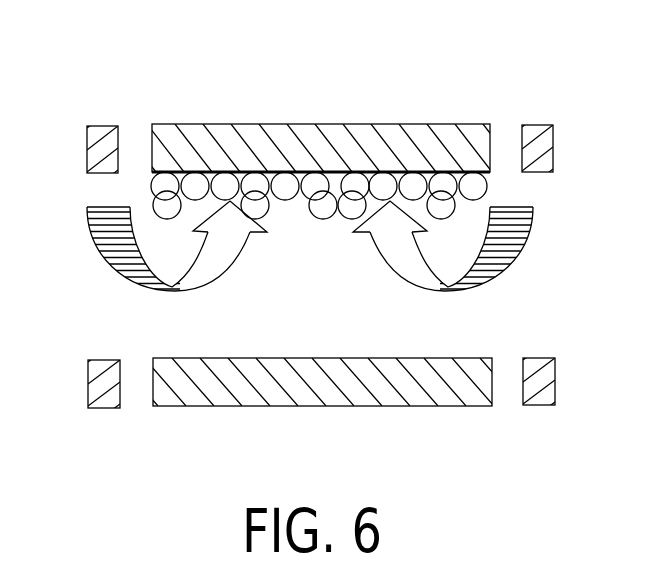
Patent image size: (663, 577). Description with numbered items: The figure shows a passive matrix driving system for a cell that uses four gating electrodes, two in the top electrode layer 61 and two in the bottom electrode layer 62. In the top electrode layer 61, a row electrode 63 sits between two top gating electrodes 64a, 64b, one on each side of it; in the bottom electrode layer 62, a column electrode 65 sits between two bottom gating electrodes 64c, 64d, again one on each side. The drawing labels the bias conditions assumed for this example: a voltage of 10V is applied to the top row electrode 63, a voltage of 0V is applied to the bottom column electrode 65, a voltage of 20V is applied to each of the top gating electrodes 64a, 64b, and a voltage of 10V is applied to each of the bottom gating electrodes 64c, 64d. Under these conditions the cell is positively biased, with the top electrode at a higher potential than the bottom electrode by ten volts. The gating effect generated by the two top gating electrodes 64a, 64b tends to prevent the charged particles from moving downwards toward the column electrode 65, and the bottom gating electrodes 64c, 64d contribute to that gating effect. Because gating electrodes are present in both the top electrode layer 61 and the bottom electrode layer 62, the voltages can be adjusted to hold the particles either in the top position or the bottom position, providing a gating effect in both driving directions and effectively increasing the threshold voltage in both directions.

The top electrode layer 61 is at (580, 120).
The bottom electrode layer 62 is at (578, 355).
The row electrode 63 is at (210, 124).
The gating electrode 64a is at (90, 173).
The gating electrode 64b is at (553, 172).
The gating electrode 64c is at (88, 362).
The gating electrode 64d is at (560, 356).
The column electrode 65 is at (250, 406).
The gating electrode voltage 20V is at (97, 125).
The applied voltage 10V is at (395, 124).
The column electrode voltage 0V is at (420, 406).